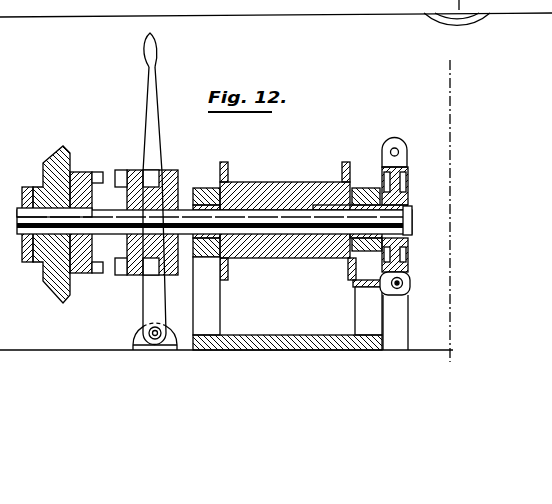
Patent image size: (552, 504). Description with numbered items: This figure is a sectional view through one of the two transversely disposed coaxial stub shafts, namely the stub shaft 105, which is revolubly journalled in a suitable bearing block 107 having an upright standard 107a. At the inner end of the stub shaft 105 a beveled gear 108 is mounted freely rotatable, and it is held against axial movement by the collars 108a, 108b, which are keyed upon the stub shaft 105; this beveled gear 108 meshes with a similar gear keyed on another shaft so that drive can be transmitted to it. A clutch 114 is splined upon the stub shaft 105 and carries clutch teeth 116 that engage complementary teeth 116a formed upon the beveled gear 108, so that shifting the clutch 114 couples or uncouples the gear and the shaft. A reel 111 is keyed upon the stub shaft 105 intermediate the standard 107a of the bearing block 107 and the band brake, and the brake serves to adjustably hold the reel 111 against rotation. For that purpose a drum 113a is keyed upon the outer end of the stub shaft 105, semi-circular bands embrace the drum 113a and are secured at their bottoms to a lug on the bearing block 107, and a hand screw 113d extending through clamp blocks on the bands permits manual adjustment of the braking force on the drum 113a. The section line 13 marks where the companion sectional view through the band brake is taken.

The section line 13- 13 is at (452, 78).
The stub shaft 105 is at (280, 224).
The bearing block 107 is at (277, 337).
The standard 107a is at (208, 314).
The beveled gear 108 is at (52, 290).
The collar 108a is at (27, 187).
The collar 108b is at (82, 278).
The reel 111 is at (271, 184).
The drum 113a is at (400, 253).
The hand screw 113d is at (398, 295).
The clutch 114 is at (173, 172).
The clutch teeth 116 is at (118, 172).
The complementary teeth 116a is at (95, 172).